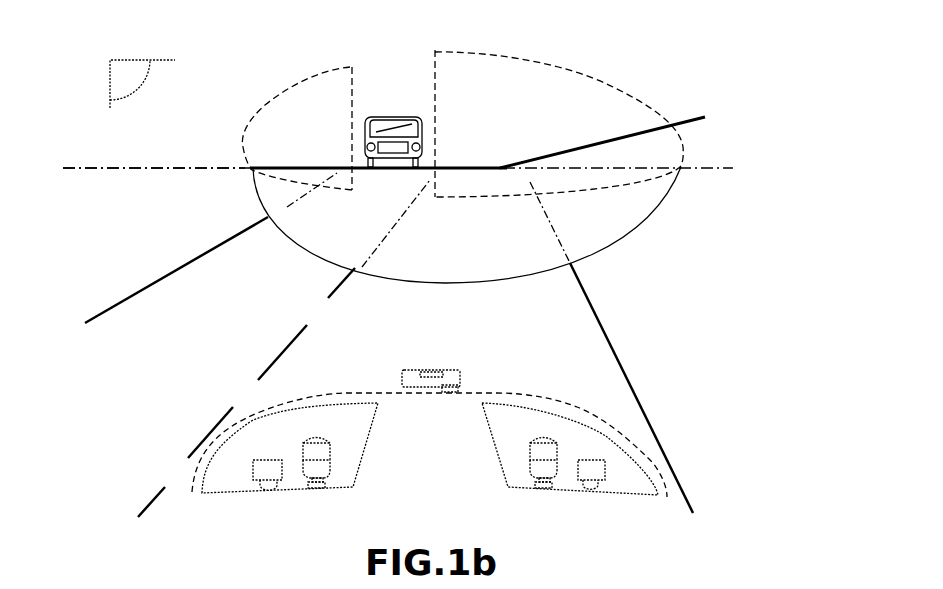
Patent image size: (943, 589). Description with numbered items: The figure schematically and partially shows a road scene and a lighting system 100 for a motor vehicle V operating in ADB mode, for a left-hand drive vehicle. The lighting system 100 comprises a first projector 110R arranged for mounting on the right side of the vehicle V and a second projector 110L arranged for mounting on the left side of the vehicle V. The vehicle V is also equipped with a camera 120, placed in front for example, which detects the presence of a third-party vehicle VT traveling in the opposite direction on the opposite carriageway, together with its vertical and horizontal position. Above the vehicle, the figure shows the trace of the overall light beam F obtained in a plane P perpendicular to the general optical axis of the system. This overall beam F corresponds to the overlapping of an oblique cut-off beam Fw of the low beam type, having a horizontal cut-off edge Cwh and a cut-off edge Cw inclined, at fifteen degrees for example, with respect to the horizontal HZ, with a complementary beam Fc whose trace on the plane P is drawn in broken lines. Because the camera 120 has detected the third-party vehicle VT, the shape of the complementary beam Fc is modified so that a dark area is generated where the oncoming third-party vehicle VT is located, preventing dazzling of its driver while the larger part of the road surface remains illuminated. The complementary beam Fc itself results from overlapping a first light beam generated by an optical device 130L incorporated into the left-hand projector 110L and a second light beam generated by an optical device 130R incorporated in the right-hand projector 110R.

The complementary beam Fc is at (317, 77).
The plane P is at (142, 84).
The overall light beam F is at (223, 157).
The horizontal HZ is at (713, 171).
The horizontal cut-off edge Cwh is at (397, 172).
The inclined cut-off edge Cw is at (693, 120).
The third-party vehicle VT is at (395, 115).
The oblique cut-off beam Fw is at (618, 207).
The lighting system 100 is at (602, 384).
The motor vehicle V is at (660, 457).
The second projector 110L is at (312, 405).
The first projector 110R is at (510, 402).
The camera 120 is at (412, 370).
The optical device 130L is at (260, 473).
The optical device 130R is at (605, 473).